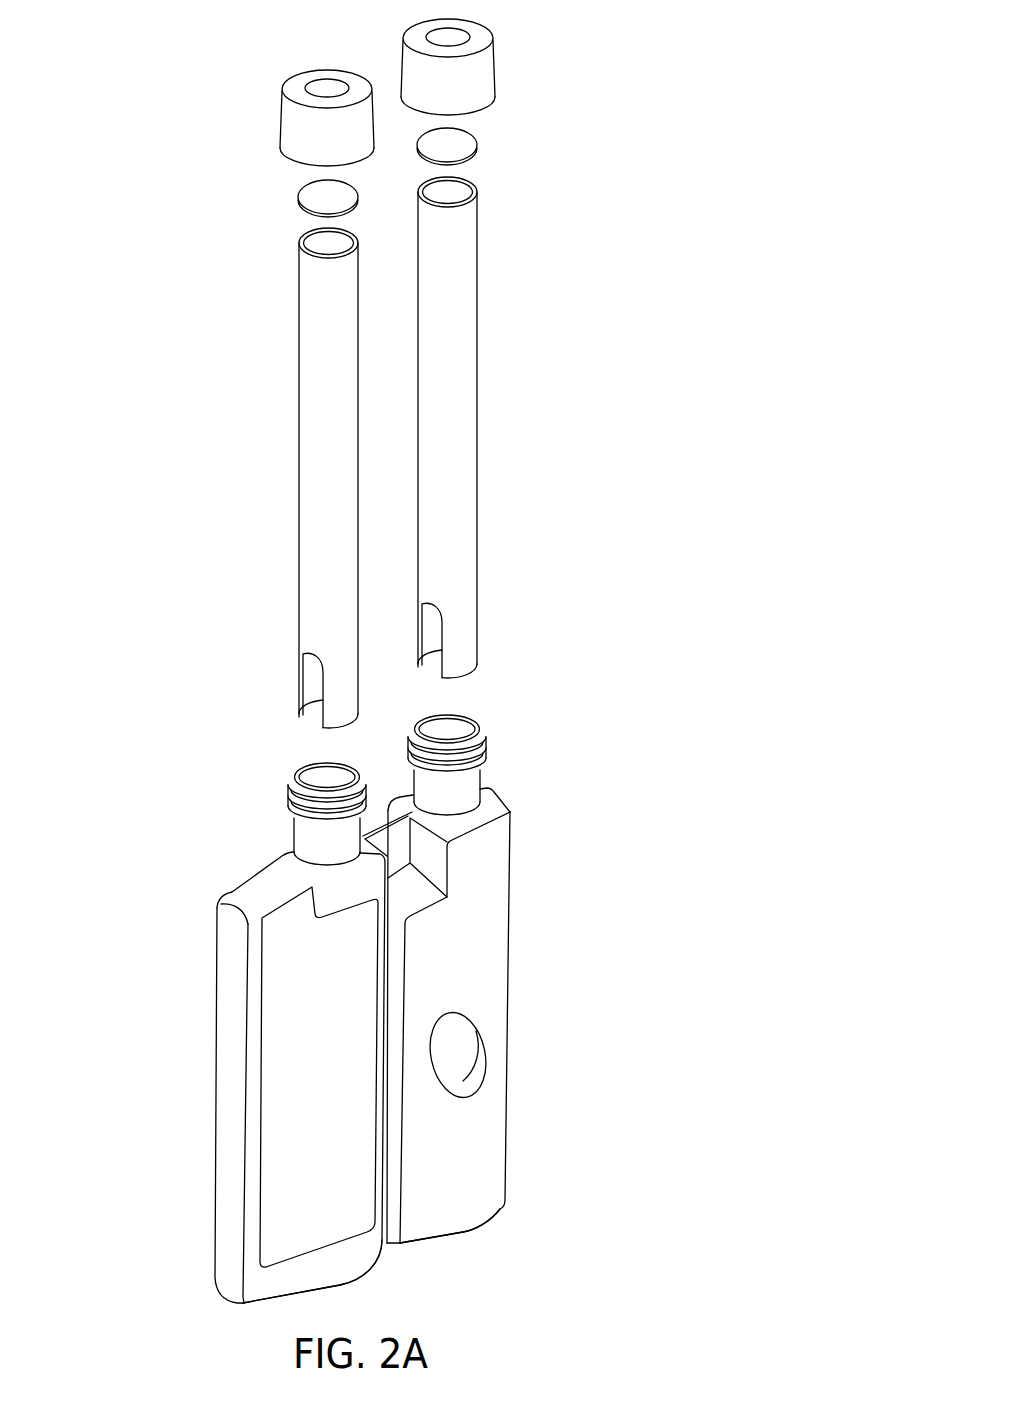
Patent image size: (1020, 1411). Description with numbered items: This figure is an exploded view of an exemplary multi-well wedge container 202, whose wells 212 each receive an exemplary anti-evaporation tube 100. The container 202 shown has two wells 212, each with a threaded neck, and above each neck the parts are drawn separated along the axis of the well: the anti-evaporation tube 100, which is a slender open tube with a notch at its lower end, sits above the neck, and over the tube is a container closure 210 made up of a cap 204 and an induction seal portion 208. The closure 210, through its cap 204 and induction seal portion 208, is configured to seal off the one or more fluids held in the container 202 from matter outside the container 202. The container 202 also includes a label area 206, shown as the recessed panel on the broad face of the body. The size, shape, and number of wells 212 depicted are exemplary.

The anti-evaporation tube 100 is at (477, 426).
The multi-well wedge container 202 is at (475, 947).
The cap 204 is at (497, 67).
The label area 206 is at (303, 1032).
The induction seal portion 208 is at (470, 147).
The container closure 210 is at (485, 117).
The well 212 is at (342, 1263).